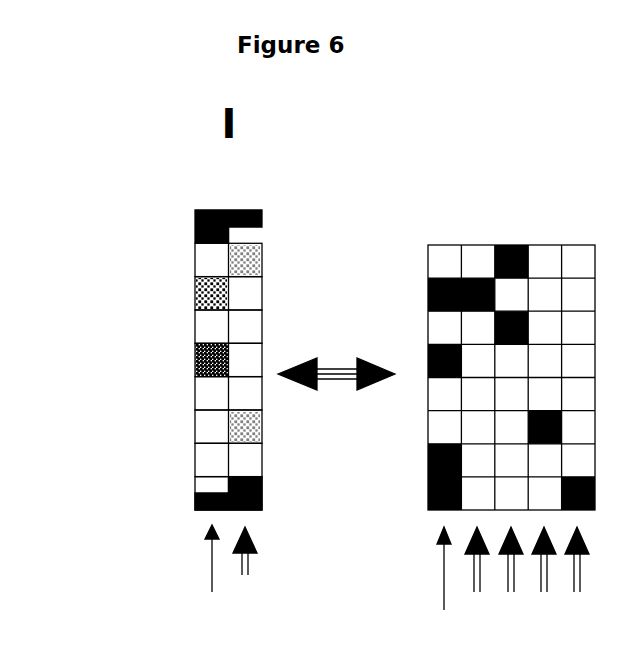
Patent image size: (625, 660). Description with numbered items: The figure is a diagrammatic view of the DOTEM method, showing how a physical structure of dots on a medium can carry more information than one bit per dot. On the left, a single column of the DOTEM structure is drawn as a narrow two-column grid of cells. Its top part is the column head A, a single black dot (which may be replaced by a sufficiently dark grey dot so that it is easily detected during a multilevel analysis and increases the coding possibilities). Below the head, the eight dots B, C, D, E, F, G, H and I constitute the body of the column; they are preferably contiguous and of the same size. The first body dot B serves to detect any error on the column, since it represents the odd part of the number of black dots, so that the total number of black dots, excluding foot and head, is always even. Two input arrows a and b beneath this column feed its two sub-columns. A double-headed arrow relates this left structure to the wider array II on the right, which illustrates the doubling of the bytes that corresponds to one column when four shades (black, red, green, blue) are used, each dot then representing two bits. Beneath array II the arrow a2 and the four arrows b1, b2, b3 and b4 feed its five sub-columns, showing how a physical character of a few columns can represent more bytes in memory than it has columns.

The column head A is at (174, 208).
The first dot of the body B is at (184, 260).
The body dot C is at (196, 293).
The body dot D is at (184, 327).
The body dot E is at (196, 360).
The body dot F is at (184, 393).
The body dot G is at (196, 427).
The body dot H is at (184, 460).
The body dot I is at (196, 493).
The column a input arrow a is at (211, 587).
The column b input arrow b is at (249, 588).
The array II is at (511, 305).
The column a input arrow of array II a2 is at (455, 627).
The column b1 input arrow b1 is at (496, 627).
The column b2 input arrow b2 is at (529, 627).
The column b3 input arrow b3 is at (562, 627).
The column b4 input arrow b4 is at (595, 627).